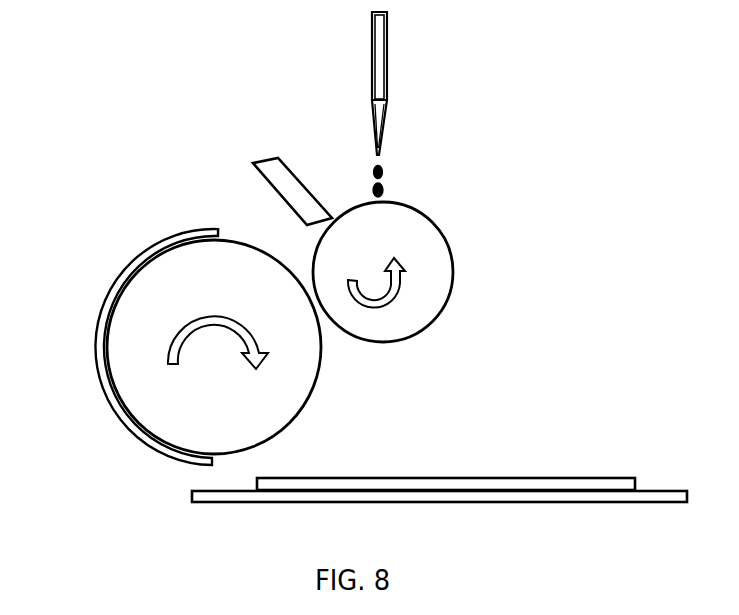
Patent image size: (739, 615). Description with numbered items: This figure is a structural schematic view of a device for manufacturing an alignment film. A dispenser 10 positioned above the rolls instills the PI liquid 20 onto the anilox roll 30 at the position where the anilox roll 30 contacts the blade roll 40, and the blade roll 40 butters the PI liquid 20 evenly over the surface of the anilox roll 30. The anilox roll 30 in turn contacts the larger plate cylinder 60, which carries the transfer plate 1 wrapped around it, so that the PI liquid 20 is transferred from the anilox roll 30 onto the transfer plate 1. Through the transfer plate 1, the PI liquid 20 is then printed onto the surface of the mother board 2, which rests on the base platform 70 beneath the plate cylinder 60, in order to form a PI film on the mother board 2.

The dispenser 10 is at (388, 78).
The PI liquid 20 is at (383, 176).
The anilox roll 30 is at (453, 268).
The blade roll 40 is at (277, 178).
The plate cylinder 60 is at (142, 391).
The transfer plate 1 is at (130, 428).
The mother board 2 is at (469, 477).
The base platform 70 is at (653, 491).